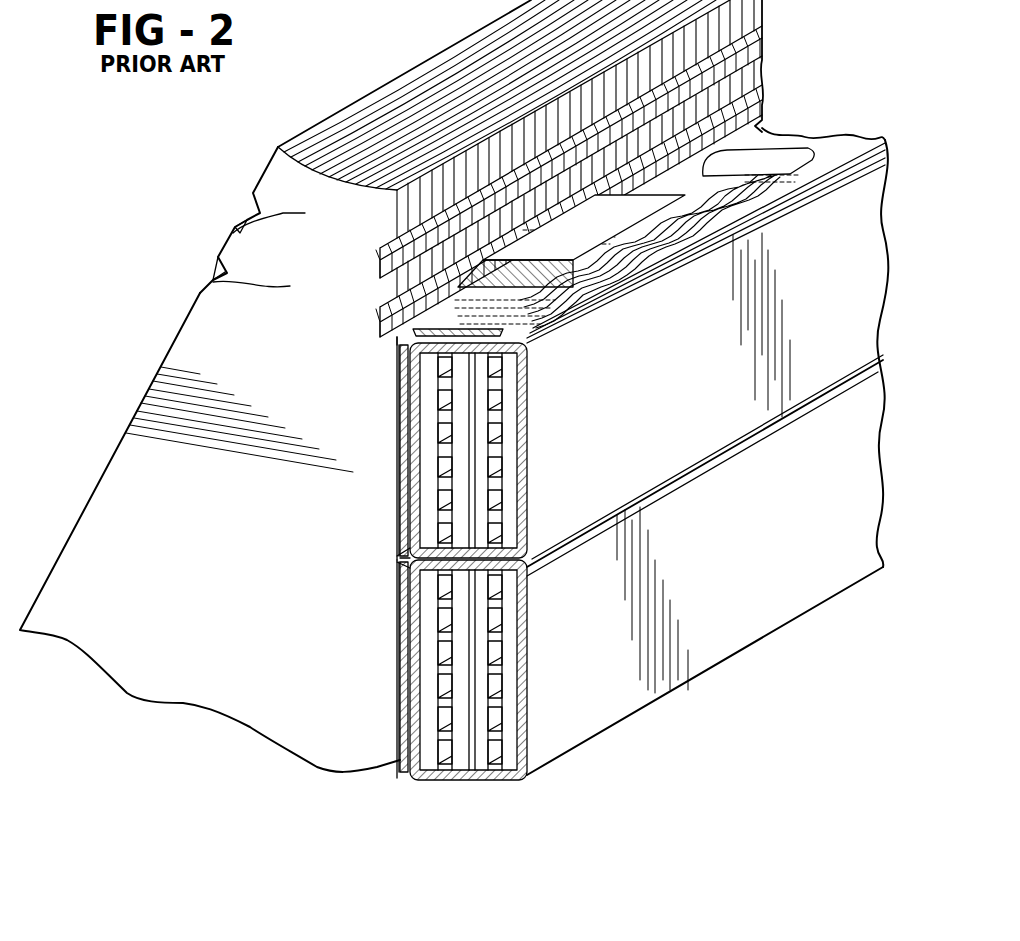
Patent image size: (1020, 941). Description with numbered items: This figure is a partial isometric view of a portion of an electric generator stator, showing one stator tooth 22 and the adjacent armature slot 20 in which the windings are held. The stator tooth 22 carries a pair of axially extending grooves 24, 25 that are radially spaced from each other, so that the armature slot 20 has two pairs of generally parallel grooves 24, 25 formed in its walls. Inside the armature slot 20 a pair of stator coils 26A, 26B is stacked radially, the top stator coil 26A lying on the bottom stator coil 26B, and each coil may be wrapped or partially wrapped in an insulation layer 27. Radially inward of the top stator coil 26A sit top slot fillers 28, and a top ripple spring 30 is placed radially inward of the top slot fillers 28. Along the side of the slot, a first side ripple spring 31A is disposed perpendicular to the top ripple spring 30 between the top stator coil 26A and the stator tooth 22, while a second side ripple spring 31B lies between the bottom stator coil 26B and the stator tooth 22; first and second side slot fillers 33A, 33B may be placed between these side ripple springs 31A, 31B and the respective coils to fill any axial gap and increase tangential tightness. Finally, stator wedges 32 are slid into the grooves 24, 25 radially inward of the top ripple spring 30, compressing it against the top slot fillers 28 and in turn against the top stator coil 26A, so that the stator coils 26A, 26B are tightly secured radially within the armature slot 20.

The armature slot 20 is at (415, 486).
The stator tooth 22 is at (130, 500).
The groove 24 is at (378, 252).
The groove 25 is at (378, 322).
The top stator coil 26A is at (460, 432).
The bottom stator coil 26B is at (460, 673).
The insulation layer 27 is at (527, 490).
The top slot filler 28 is at (523, 333).
The top ripple spring 30 is at (735, 182).
The first side ripple spring 31A is at (397, 425).
The second side ripple spring 31B is at (395, 667).
The stator wedge 32 is at (573, 243).
The first side slot filler 33A is at (398, 393).
The second side slot filler 33B is at (397, 608).